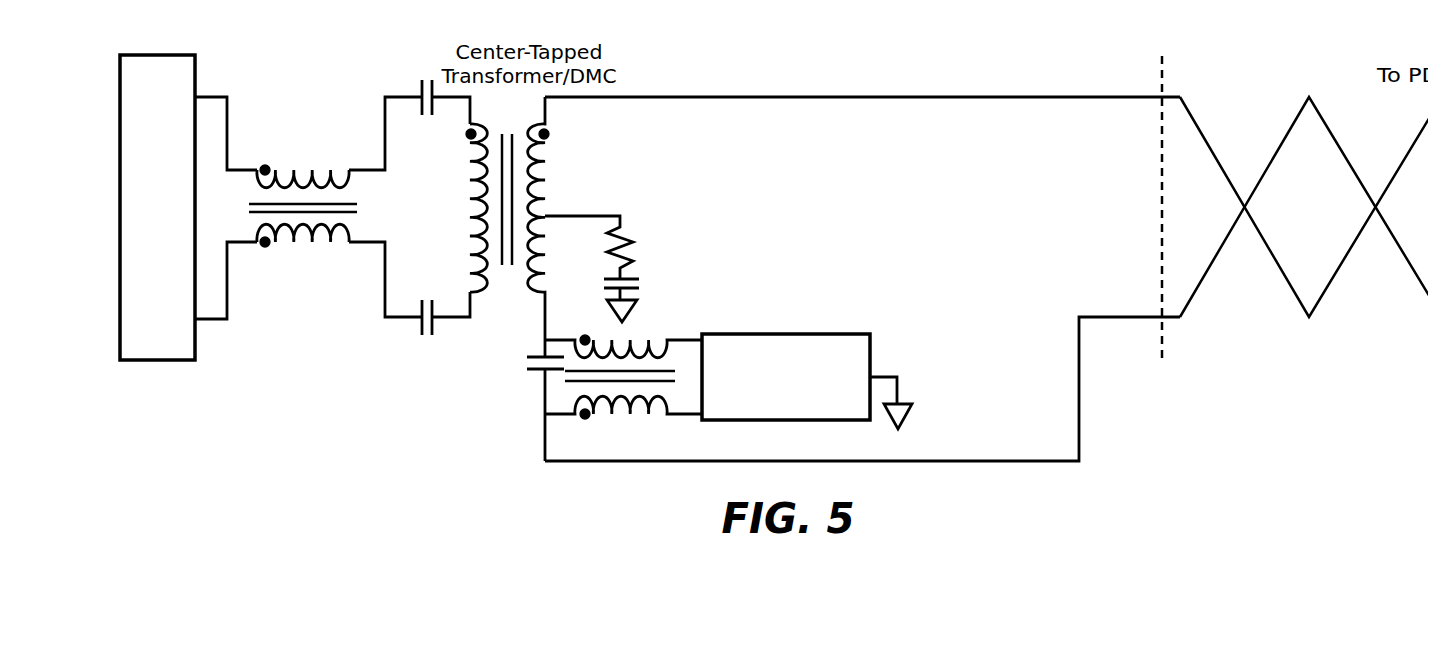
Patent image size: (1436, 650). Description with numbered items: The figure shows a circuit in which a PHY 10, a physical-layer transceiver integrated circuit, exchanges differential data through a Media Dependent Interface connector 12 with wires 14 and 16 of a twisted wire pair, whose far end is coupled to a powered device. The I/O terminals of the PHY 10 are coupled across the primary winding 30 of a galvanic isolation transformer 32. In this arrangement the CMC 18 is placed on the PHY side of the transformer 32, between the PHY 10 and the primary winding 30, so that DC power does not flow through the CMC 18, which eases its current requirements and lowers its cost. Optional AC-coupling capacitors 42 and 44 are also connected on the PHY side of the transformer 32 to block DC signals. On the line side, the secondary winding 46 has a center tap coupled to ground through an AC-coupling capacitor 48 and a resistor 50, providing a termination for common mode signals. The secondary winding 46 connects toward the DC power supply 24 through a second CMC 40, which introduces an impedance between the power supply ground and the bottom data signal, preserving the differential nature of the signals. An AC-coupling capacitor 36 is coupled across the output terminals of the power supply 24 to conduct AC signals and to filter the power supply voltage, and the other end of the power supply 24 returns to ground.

The PHY 10 is at (118, 165).
The Media Dependent Interface (MDI) connector 12 is at (1160, 78).
The wire 14 is at (1207, 140).
The wire 16 is at (1207, 268).
The CMC 18 is at (310, 175).
The DC power supply 24 is at (800, 332).
The primary winding 30 is at (468, 217).
The galvanic isolation transformer 32 is at (507, 318).
The AC-coupling capacitor 36 is at (532, 370).
The CMC 40 is at (628, 338).
The AC-coupling capacitor 42 is at (420, 85).
The AC-coupling capacitor 44 is at (420, 325).
The secondary winding 46 is at (545, 195).
The AC-coupling capacitor 48 is at (637, 282).
The resistor 50 is at (620, 227).